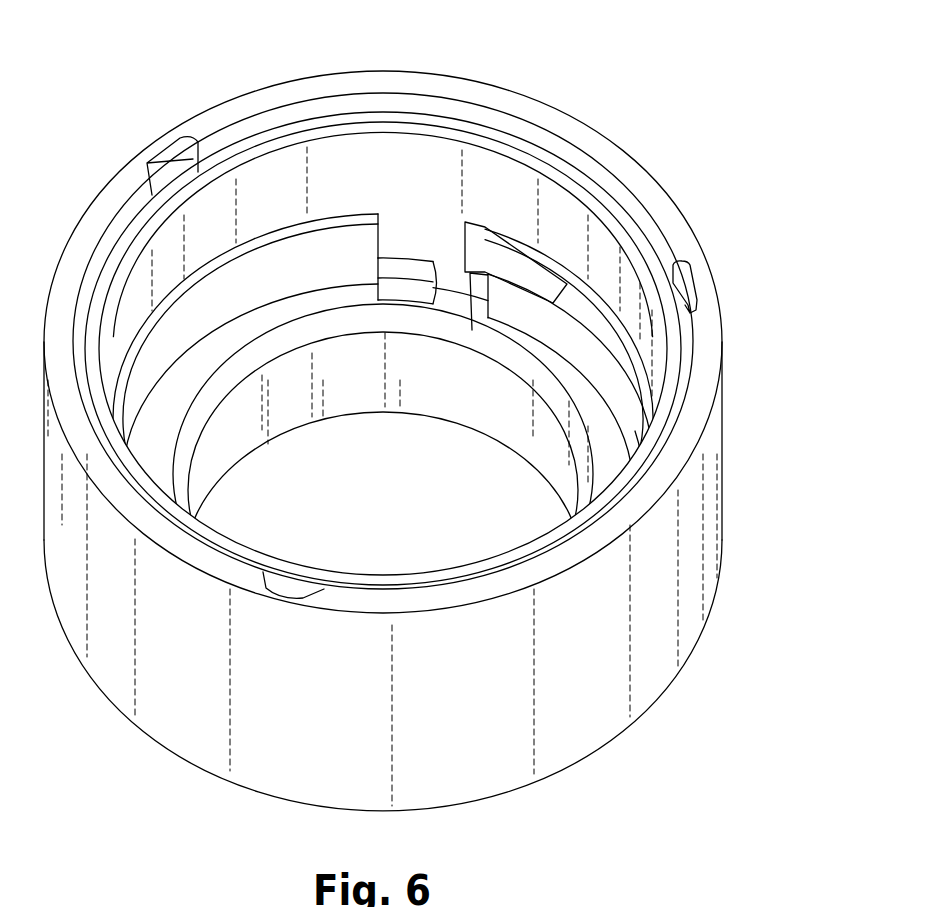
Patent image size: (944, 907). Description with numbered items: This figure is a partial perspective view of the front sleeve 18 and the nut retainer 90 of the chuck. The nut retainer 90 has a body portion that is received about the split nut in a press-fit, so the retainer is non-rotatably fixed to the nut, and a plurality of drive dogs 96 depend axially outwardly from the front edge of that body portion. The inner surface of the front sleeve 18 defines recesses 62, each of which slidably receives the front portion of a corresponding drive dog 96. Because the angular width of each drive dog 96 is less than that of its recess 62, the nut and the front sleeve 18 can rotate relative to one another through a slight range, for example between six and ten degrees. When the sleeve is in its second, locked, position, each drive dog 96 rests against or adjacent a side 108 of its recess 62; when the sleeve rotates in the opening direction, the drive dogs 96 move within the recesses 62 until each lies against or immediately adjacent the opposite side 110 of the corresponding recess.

The front sleeve 18 is at (580, 698).
The recess 62 is at (511, 272).
The nut retainer 90 is at (268, 202).
The drive dog 96 is at (479, 305).
The side of recess 108 is at (560, 297).
The side of recess 110 is at (378, 256).